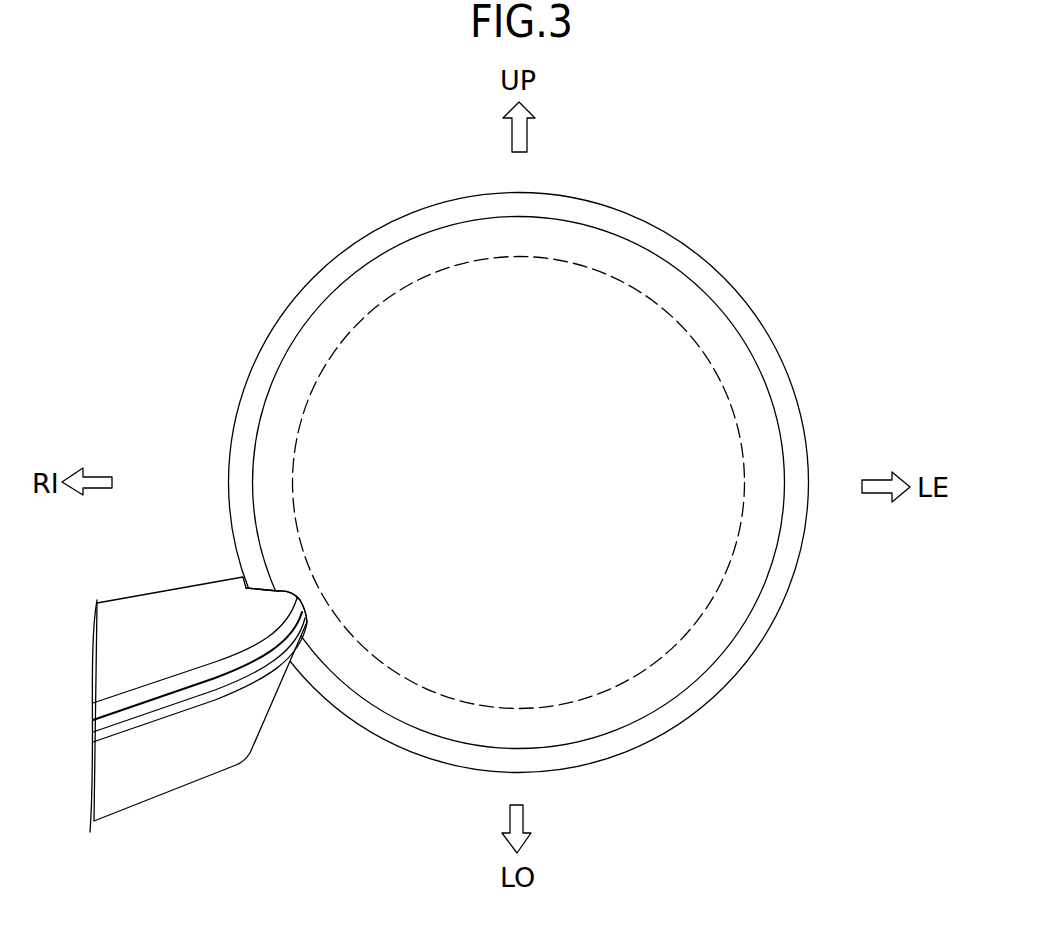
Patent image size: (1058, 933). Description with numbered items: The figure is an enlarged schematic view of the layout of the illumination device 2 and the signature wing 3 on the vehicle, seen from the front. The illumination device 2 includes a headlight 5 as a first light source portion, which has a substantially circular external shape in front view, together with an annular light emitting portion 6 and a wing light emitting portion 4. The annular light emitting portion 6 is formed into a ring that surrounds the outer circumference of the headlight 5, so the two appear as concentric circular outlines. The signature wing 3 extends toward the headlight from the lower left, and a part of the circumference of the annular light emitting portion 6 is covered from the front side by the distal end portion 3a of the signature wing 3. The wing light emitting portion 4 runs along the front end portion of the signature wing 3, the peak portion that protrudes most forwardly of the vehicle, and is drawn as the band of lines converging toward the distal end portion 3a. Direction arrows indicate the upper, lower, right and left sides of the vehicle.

The illumination device 2 is at (667, 230).
The signature wing 3 is at (178, 613).
The distal end portion 3a is at (289, 580).
The wing light emitting portion 4 is at (185, 698).
The headlight 5 is at (657, 667).
The annular light emitting portion 6 is at (776, 593).